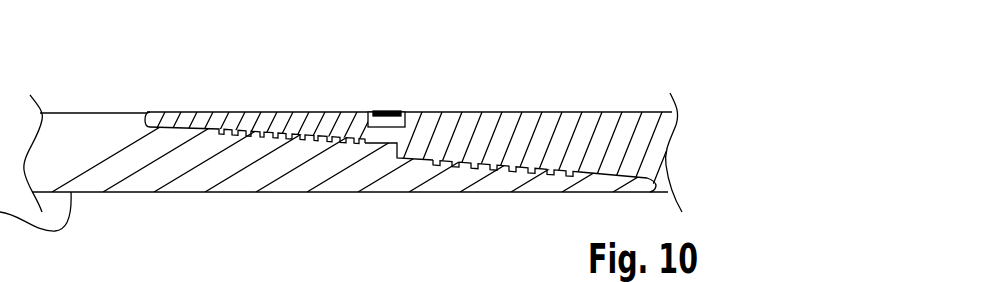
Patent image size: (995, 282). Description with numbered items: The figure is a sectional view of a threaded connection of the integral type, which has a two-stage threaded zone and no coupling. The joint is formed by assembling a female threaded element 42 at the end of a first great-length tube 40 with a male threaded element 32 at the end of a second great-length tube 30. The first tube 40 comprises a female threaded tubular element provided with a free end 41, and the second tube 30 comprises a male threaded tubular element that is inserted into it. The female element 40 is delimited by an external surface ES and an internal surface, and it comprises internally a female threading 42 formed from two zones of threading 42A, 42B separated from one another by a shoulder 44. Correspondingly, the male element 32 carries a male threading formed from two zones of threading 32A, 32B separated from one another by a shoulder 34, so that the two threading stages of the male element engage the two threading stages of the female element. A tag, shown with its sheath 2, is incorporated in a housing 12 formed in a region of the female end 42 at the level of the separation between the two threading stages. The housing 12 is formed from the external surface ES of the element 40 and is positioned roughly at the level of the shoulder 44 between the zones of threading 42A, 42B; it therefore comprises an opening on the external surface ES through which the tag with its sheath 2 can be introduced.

The second tube 30 is at (83, 133).
The free end 41 is at (146, 127).
The first zone of threading 42A is at (244, 124).
The sheath 2 is at (388, 111).
The housing 12 is at (403, 112).
The shoulder 44 is at (435, 157).
The first tube 40 is at (488, 140).
The female threaded element 42 is at (570, 110).
The second zone of threading 42B is at (503, 160).
The external surface ES is at (602, 112).
The male threaded element 32 is at (191, 181).
The first zone of male threading 32A is at (283, 140).
The shoulder 34 is at (385, 158).
The second zone of male threading 32B is at (528, 175).